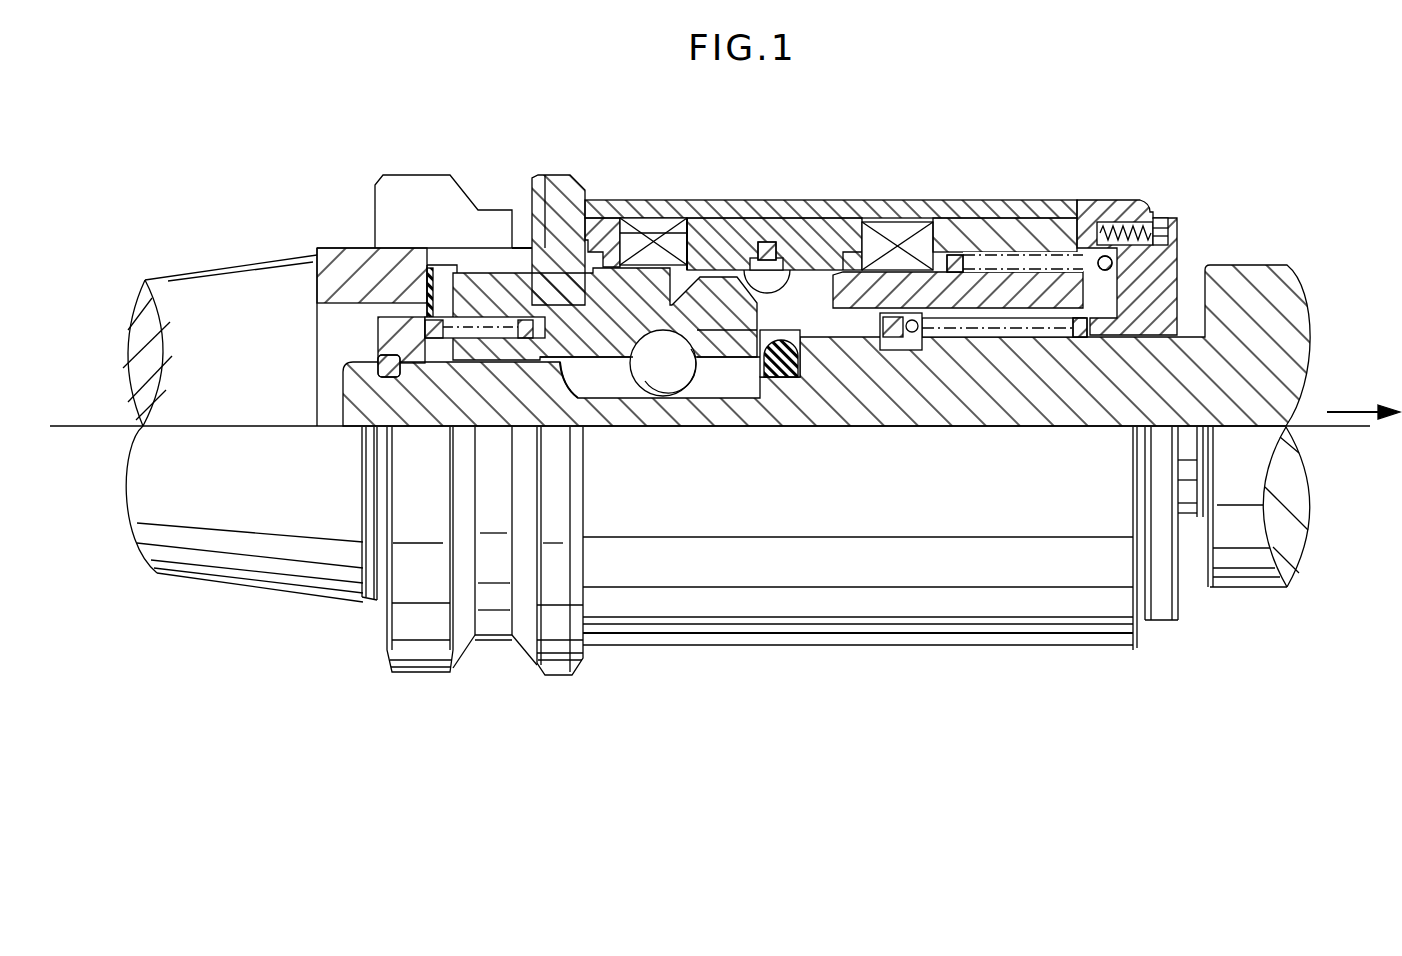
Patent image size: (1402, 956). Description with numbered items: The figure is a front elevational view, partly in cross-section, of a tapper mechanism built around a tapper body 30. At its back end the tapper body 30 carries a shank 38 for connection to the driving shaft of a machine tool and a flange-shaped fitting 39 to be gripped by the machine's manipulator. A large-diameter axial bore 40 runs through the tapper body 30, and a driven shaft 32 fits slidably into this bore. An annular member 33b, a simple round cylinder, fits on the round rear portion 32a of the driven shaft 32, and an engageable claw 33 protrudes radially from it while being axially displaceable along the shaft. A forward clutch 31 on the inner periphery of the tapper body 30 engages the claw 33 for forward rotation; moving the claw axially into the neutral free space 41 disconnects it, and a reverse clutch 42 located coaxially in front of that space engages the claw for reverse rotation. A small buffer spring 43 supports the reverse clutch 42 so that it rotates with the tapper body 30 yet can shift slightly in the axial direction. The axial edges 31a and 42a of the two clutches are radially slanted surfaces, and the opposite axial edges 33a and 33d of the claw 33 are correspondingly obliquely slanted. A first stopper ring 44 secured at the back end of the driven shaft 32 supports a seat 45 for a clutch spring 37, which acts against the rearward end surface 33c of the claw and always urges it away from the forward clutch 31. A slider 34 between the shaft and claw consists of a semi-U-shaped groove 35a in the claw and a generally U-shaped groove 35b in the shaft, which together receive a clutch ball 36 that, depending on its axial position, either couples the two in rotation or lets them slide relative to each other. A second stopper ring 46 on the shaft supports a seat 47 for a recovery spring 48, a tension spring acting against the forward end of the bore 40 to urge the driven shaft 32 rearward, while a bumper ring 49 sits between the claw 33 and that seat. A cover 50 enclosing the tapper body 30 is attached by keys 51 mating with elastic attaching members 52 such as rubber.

The tapper body 30 is at (538, 265).
The forward clutch 31 is at (795, 250).
The axial edge of forward clutch 31a is at (838, 255).
The driven shaft 32 is at (1105, 385).
The rear portion of driven shaft 32a is at (377, 397).
The engageable claw 33 is at (722, 345).
The axial edge of engageable claw 33a is at (660, 240).
The annular member 33b is at (612, 378).
The rearward end surface of engageable claw 33c is at (520, 265).
The axial edge of engageable claw 33d is at (790, 296).
The slider 34 is at (570, 375).
The semi-U-shaped groove 35a is at (742, 362).
The U-shaped groove 35b is at (604, 392).
The clutch ball 36 is at (722, 372).
The clutch spring 37 is at (437, 262).
The shank 38 is at (190, 298).
The flange-shaped fitting 39 is at (497, 600).
The axial bore 40 is at (458, 402).
The neutral free space 41 is at (900, 245).
The reverse clutch 42 is at (940, 240).
The axial edge of reverse clutch 42a is at (905, 332).
The buffer spring 43 is at (1080, 235).
The first stopper ring 44 is at (377, 358).
The seat 45 is at (385, 332).
The second stopper ring 46 is at (920, 340).
The seat 47 is at (905, 340).
The recovery spring 48 is at (1080, 343).
The bumper ring 49 is at (798, 372).
The cover 50 is at (606, 235).
The keys 51 is at (740, 225).
The elastic attaching members 52 is at (692, 235).